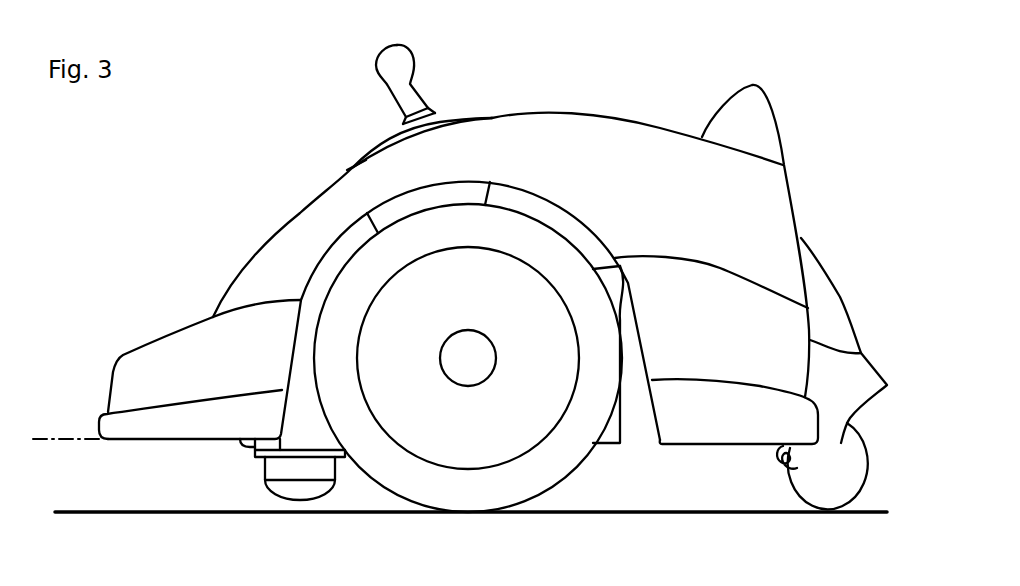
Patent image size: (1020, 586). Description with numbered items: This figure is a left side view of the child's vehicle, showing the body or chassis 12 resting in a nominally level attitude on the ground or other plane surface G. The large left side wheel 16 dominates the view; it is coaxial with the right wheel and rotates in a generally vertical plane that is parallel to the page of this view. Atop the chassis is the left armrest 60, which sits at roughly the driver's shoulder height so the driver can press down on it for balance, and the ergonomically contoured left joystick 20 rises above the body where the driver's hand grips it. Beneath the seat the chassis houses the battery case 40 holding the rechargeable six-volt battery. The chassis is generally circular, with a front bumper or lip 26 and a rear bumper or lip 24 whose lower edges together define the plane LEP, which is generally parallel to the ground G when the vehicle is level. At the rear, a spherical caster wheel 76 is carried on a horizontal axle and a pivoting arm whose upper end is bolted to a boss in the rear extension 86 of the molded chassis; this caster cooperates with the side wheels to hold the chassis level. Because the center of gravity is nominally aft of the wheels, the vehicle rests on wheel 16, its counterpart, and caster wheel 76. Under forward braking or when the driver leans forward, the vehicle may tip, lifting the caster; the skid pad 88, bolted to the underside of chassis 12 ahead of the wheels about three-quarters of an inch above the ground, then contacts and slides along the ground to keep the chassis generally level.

The body or chassis 12 is at (289, 240).
The left side wheel 16 is at (460, 502).
The left joystick 20 is at (400, 54).
The rear bumper or lip 24 is at (733, 435).
The front bumper or lip 26 is at (108, 423).
The battery case 40 is at (605, 447).
The left armrest 60 is at (562, 128).
The spherical caster wheel 76 is at (837, 487).
The rear extension 86 is at (853, 373).
The skid pad 88 is at (273, 463).
The ground or plane surface G is at (193, 511).
The lower edge plane LEP is at (70, 441).